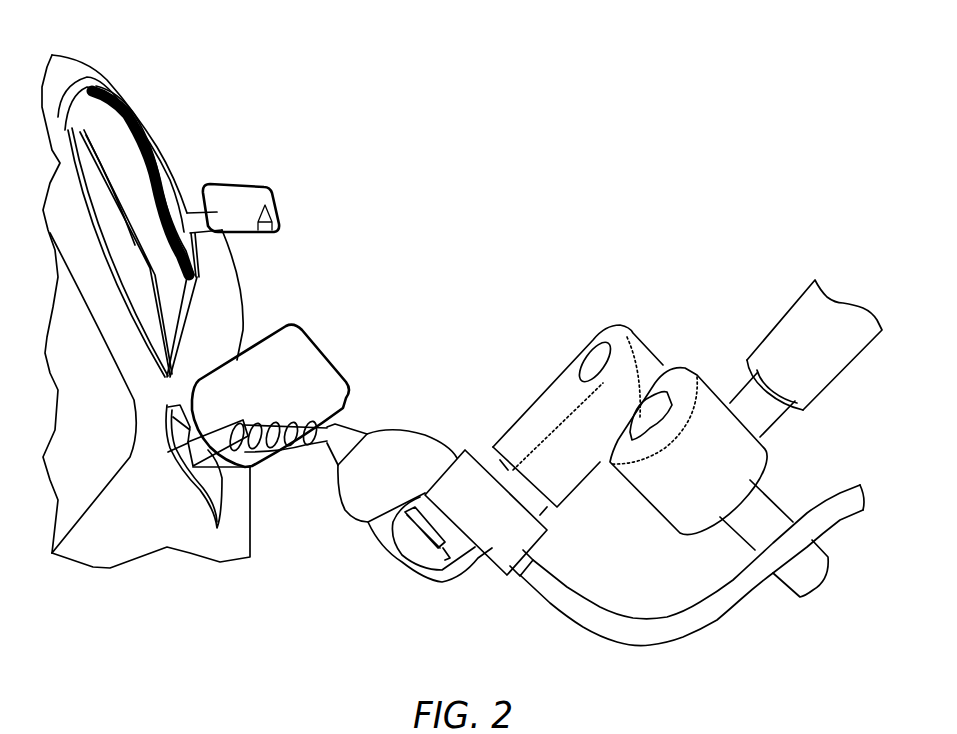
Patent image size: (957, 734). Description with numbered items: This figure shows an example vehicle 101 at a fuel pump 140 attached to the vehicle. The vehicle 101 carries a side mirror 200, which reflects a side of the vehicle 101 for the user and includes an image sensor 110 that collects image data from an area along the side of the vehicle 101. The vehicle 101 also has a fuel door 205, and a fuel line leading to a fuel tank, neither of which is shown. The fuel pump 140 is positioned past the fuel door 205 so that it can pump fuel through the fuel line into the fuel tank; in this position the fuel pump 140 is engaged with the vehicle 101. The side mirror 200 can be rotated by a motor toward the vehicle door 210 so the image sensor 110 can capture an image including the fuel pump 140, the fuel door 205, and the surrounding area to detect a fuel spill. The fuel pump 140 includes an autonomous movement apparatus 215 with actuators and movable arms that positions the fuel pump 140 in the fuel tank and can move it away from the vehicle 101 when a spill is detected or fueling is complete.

The vehicle 101 is at (87, 58).
The side mirror 200 is at (250, 187).
The image sensor 110 is at (268, 196).
The vehicle door 210 is at (225, 298).
The fuel door 205 is at (323, 343).
The fuel pump 140 is at (393, 424).
The autonomous movement apparatus 215 is at (583, 337).